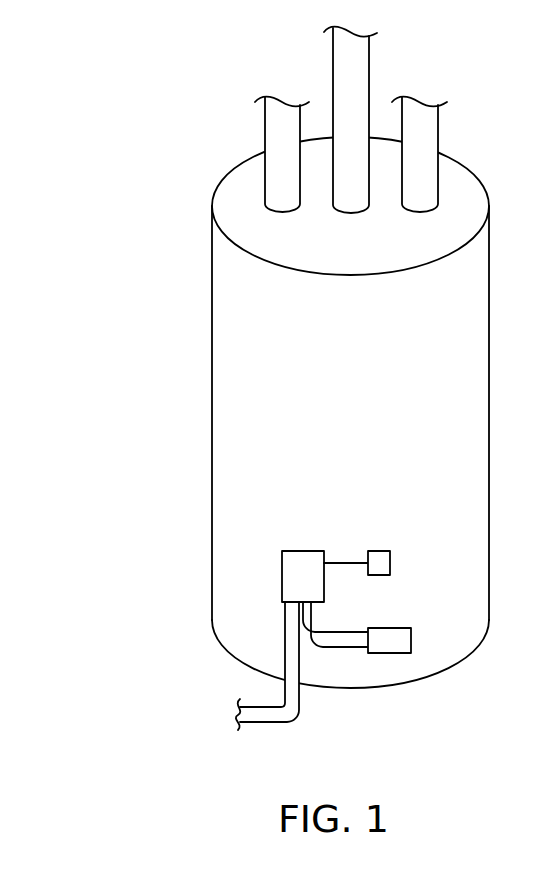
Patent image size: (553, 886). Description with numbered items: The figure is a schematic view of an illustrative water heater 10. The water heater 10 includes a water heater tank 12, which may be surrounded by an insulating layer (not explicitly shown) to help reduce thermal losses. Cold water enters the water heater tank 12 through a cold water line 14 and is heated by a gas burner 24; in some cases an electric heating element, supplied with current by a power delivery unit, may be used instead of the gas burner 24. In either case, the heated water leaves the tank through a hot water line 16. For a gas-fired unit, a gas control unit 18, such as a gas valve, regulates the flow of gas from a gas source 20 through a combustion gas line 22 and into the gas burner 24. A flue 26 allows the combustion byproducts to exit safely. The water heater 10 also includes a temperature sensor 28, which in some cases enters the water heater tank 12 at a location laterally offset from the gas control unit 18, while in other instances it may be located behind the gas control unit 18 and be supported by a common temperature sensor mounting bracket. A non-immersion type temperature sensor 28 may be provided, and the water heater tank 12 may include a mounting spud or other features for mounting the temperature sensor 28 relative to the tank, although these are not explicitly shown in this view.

The water heater 10 is at (140, 205).
The water heater tank 12 is at (228, 420).
The cold water line 14 is at (272, 131).
The hot water line 16 is at (425, 130).
The gas control unit 18 is at (302, 557).
The gas source 20 is at (286, 712).
The combustion gas line 22 is at (342, 645).
The gas burner 24 is at (398, 632).
The flue 26 is at (352, 59).
The temperature sensor 28 is at (379, 555).